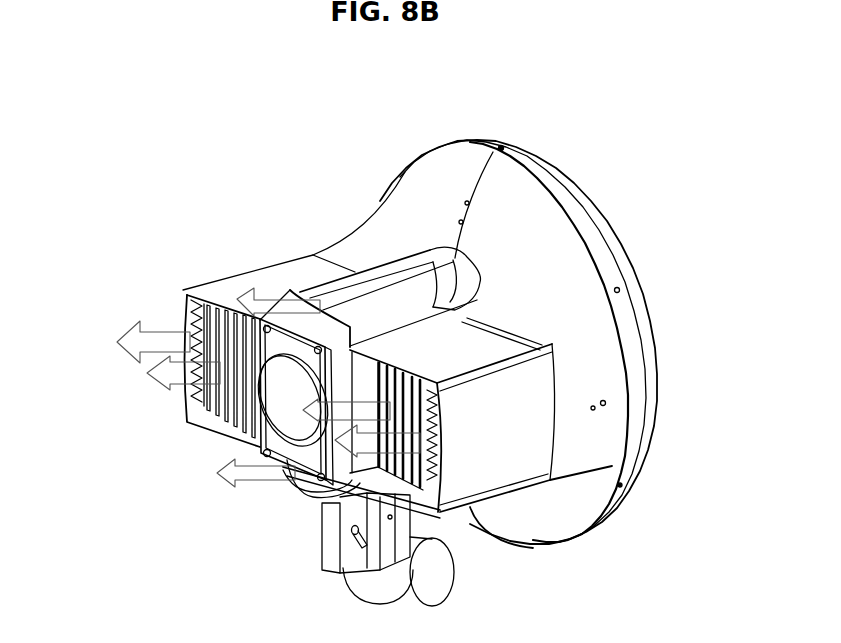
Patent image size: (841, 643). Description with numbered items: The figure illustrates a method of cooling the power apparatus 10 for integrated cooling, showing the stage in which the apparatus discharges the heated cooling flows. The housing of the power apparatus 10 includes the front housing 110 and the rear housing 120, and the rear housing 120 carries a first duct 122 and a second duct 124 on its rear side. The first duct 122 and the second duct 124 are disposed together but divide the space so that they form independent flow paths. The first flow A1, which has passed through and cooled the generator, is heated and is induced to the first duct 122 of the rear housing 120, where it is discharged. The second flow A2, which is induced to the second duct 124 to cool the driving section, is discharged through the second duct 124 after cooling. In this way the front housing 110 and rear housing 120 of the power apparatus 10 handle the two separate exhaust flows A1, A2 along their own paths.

The power apparatus for integrated cooling 10 is at (436, 98).
The front housing 110 is at (626, 245).
The rear housing 120 is at (377, 162).
The first duct 122 is at (366, 292).
The second duct 124 is at (270, 293).
The first flow A1 is at (252, 288).
The second flow A2 is at (130, 332).